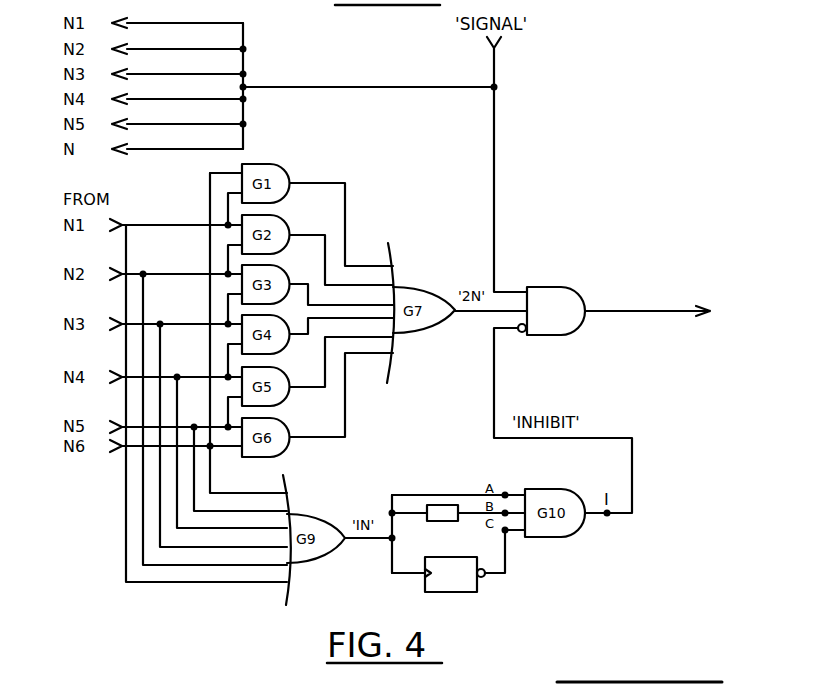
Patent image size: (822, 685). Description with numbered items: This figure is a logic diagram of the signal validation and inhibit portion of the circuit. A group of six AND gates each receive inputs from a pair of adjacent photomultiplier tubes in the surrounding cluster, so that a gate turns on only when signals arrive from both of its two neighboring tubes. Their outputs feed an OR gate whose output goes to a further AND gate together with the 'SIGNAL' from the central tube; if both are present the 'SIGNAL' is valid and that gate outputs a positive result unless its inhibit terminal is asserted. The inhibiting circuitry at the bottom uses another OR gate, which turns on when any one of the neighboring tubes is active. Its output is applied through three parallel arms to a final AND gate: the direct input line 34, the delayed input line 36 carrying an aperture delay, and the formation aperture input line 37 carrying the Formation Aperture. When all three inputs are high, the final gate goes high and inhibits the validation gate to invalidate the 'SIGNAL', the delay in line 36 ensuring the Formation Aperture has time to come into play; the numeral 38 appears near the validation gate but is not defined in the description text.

The direct input line 34 is at (403, 494).
The delayed input line 36 is at (405, 515).
The formation aperture input line 37 is at (406, 577).
The output gate G8 (valid signal) 38 is at (618, 297).